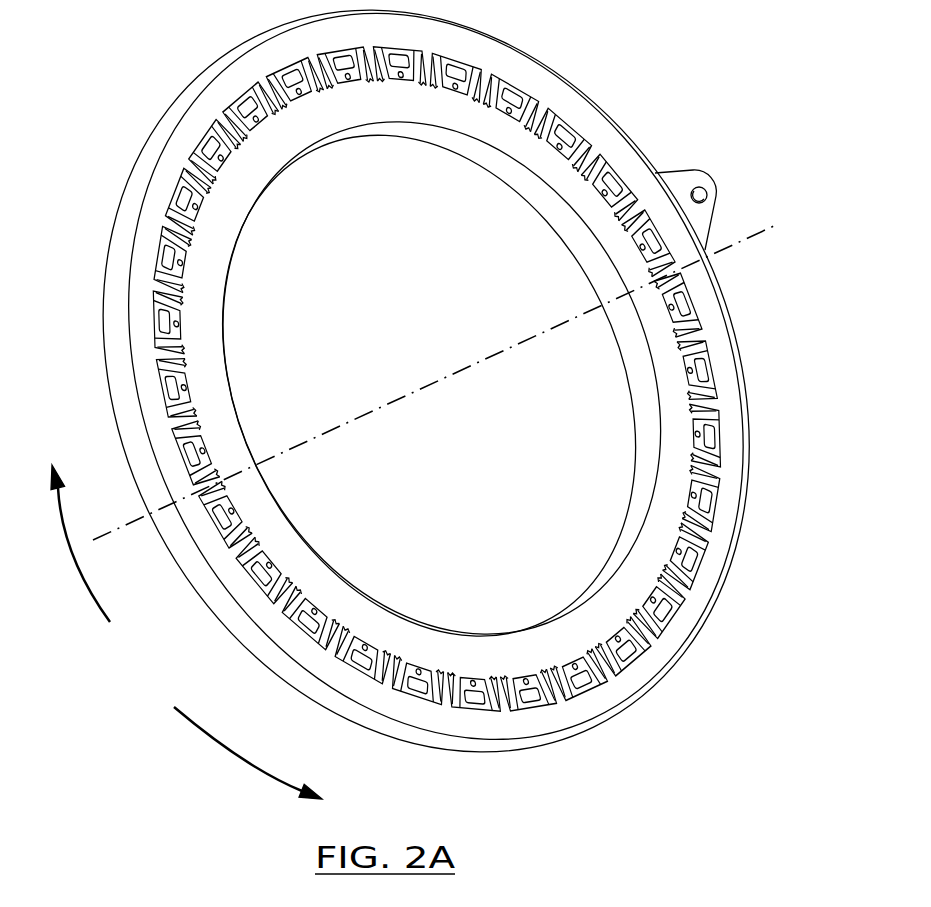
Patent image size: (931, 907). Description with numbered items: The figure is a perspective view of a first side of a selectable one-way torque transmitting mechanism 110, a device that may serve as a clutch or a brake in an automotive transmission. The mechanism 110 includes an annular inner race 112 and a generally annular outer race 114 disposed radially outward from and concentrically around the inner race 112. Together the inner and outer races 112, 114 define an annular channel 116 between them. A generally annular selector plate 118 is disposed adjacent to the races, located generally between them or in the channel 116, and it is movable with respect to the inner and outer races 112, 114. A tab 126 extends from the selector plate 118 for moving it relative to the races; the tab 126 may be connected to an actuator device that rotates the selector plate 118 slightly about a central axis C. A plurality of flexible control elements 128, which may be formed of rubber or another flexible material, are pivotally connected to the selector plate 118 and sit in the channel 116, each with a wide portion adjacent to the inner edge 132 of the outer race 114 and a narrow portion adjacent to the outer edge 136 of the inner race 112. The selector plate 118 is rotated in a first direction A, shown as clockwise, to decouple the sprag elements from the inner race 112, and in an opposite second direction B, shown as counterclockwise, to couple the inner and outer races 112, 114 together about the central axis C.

The selectable one-way torque transmitting mechanism 110 is at (435, 430).
The inner race 112 is at (636, 385).
The outer race 114 is at (535, 75).
The annular channel 116 is at (690, 345).
The selector plate 118 is at (702, 212).
The tab 126 is at (713, 182).
The flexible control element 128 is at (437, 404).
The inner edge of the outer race 132 is at (683, 293).
The outer edge of the inner race 136 is at (690, 400).
The first direction A is at (88, 555).
The second direction B is at (241, 740).
The central axis C is at (446, 373).